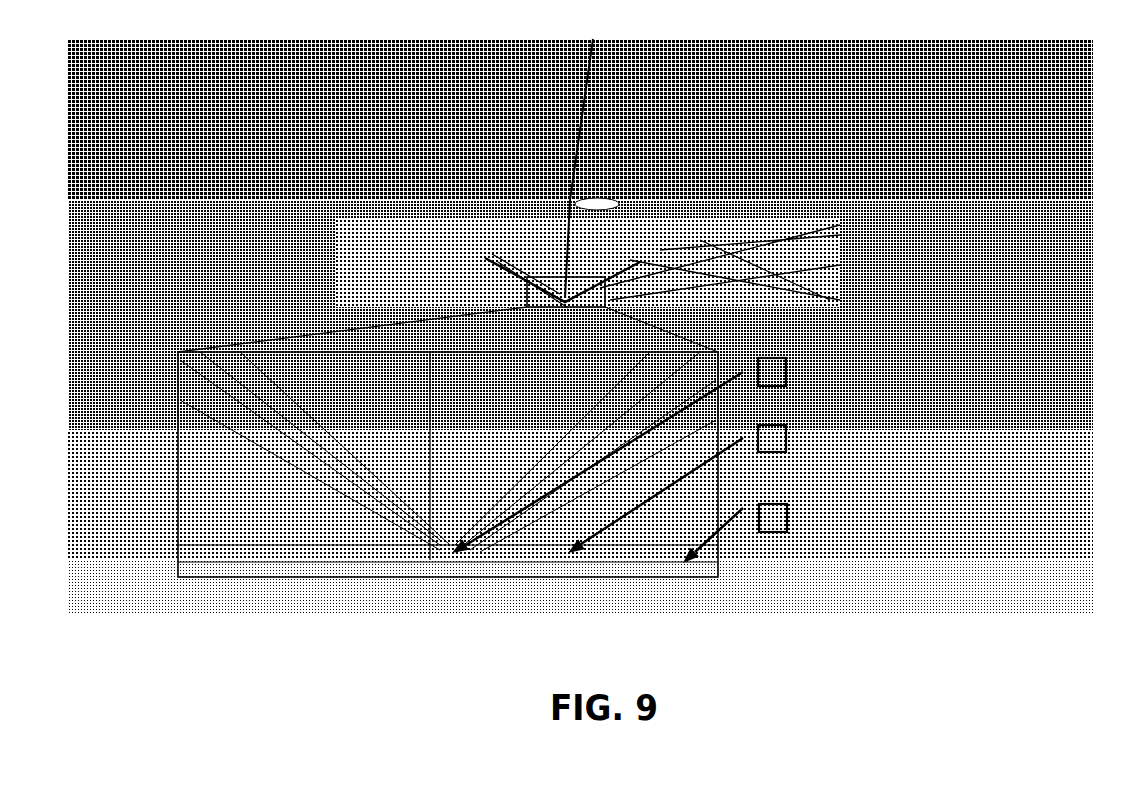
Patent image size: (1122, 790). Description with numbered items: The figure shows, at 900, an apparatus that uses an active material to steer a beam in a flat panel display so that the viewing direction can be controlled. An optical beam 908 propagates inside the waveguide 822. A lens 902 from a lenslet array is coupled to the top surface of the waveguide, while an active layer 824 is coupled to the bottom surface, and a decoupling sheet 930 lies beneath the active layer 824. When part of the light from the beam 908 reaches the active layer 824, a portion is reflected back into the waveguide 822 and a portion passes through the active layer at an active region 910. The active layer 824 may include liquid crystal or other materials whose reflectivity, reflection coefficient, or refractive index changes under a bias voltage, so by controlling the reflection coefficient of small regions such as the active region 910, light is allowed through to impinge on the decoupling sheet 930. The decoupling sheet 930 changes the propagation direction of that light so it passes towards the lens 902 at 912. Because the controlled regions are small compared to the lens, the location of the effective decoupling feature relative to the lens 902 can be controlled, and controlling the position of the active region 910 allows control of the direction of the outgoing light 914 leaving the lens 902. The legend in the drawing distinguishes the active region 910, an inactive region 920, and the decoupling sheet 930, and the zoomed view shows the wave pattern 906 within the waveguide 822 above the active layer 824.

The apparatus 900 is at (583, 22).
The lens 902 is at (621, 179).
The acoustic wave pattern in zoomed region 906 is at (411, 541).
The optical beam 908 is at (488, 272).
The active region 910 is at (754, 455).
The light passing towards lens 912 is at (548, 237).
The outgoing light 914 is at (559, 117).
The waveguide 822 is at (318, 283).
The active layer 824 is at (166, 555).
The inactive region 920 is at (824, 489).
The decoupling sheet 930 is at (897, 532).